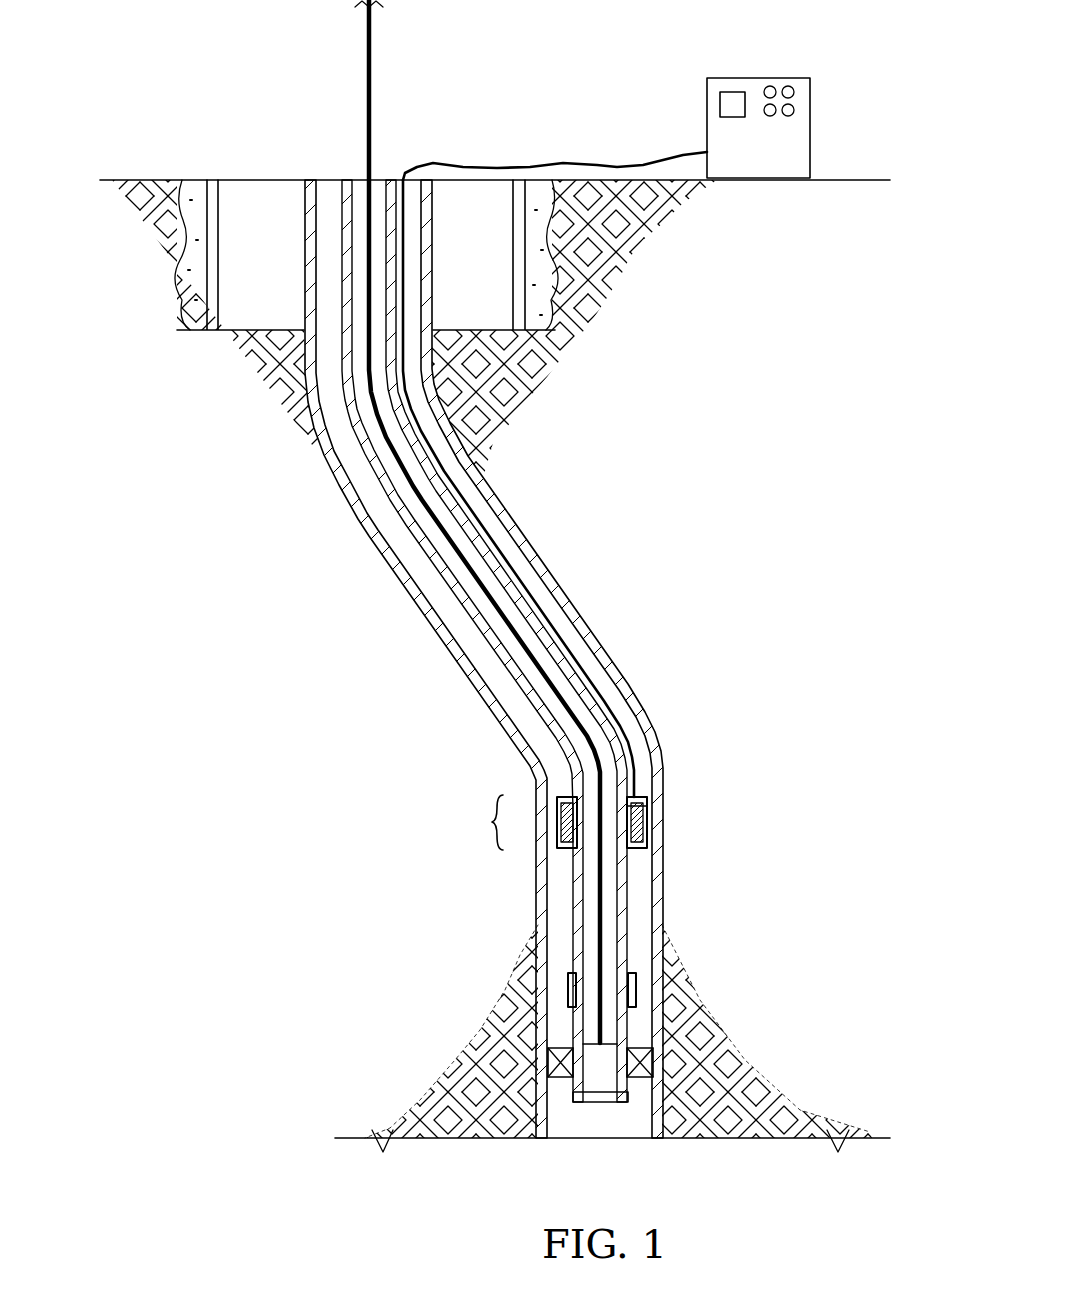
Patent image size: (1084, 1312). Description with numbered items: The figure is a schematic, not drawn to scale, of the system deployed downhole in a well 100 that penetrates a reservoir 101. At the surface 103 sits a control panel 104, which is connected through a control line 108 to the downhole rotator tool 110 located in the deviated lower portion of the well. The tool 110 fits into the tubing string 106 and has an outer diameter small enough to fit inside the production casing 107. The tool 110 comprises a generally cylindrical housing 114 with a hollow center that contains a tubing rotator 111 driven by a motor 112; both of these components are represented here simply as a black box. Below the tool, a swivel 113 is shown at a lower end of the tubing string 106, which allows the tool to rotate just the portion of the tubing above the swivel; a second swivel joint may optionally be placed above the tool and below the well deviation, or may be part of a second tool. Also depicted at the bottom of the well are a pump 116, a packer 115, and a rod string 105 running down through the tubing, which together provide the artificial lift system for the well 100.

The well 100 is at (465, 598).
The reservoir 101 is at (731, 402).
The surface 103 is at (836, 178).
The control panel 104 is at (757, 78).
The rod string 105 is at (373, 90).
The tubing string 106 is at (380, 178).
The production casing 107 is at (305, 196).
The control line 108 is at (582, 648).
The downhole rotator tool 110 is at (587, 842).
The tubing rotator 111 is at (648, 805).
The motor 112 is at (648, 843).
The swivel 113 is at (568, 977).
The housing 114 is at (557, 842).
The packer 115 is at (660, 1062).
The pump 116 is at (601, 1078).